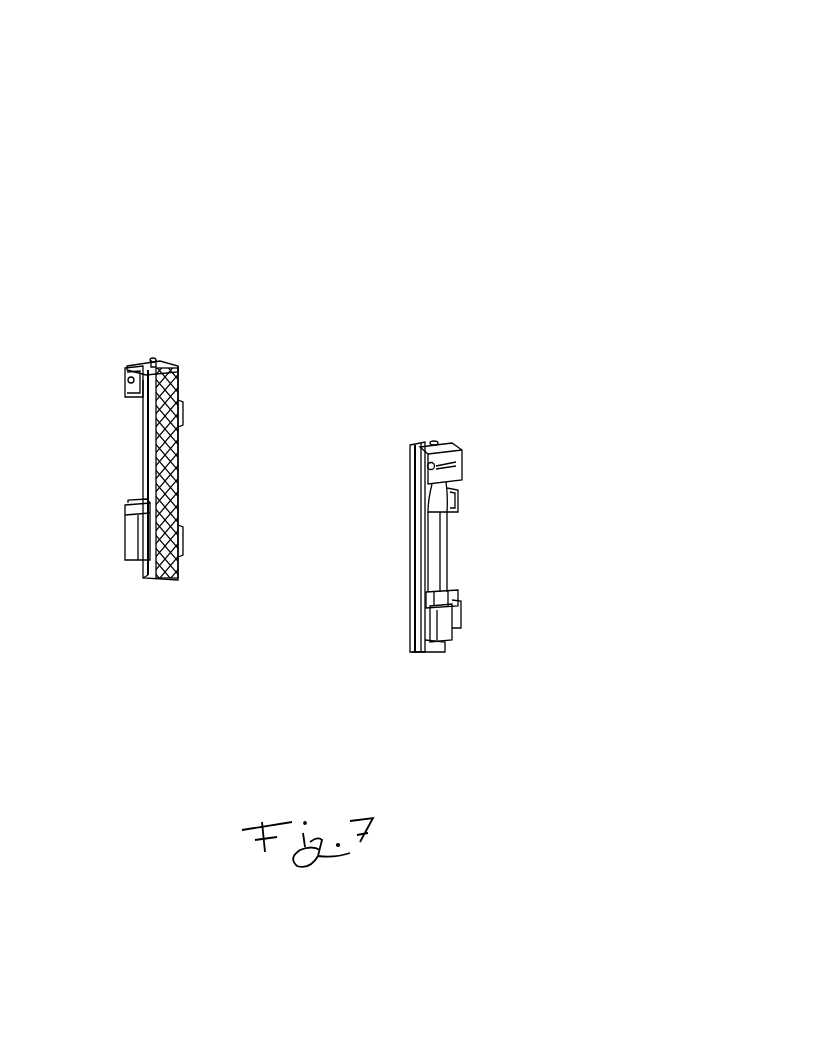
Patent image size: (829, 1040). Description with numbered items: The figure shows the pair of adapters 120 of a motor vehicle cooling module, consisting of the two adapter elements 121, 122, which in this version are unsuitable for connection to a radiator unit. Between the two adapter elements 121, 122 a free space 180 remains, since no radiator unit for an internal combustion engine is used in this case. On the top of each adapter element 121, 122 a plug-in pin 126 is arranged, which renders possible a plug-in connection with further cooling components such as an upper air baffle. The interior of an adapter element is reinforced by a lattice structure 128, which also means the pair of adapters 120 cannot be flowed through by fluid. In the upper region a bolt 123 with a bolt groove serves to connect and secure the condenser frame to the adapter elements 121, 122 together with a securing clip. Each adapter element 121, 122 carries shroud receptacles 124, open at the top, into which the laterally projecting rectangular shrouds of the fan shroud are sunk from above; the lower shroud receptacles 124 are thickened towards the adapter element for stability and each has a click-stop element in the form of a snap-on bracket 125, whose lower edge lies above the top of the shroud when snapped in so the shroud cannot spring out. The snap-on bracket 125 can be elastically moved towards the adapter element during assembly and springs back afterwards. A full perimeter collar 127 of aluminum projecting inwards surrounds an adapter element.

The pair of adapters 120 is at (292, 205).
The adapter element 121 is at (465, 453).
The adapter element 122 is at (181, 342).
The bolt 123 is at (323, 380).
The shroud receptacle 124 is at (331, 561).
The snap-on bracket 125 is at (503, 561).
The plug-in pin 126 is at (178, 285).
The full perimeter collar 127 is at (383, 484).
The lattice structure 128 is at (222, 420).
The free space 180 is at (300, 505).